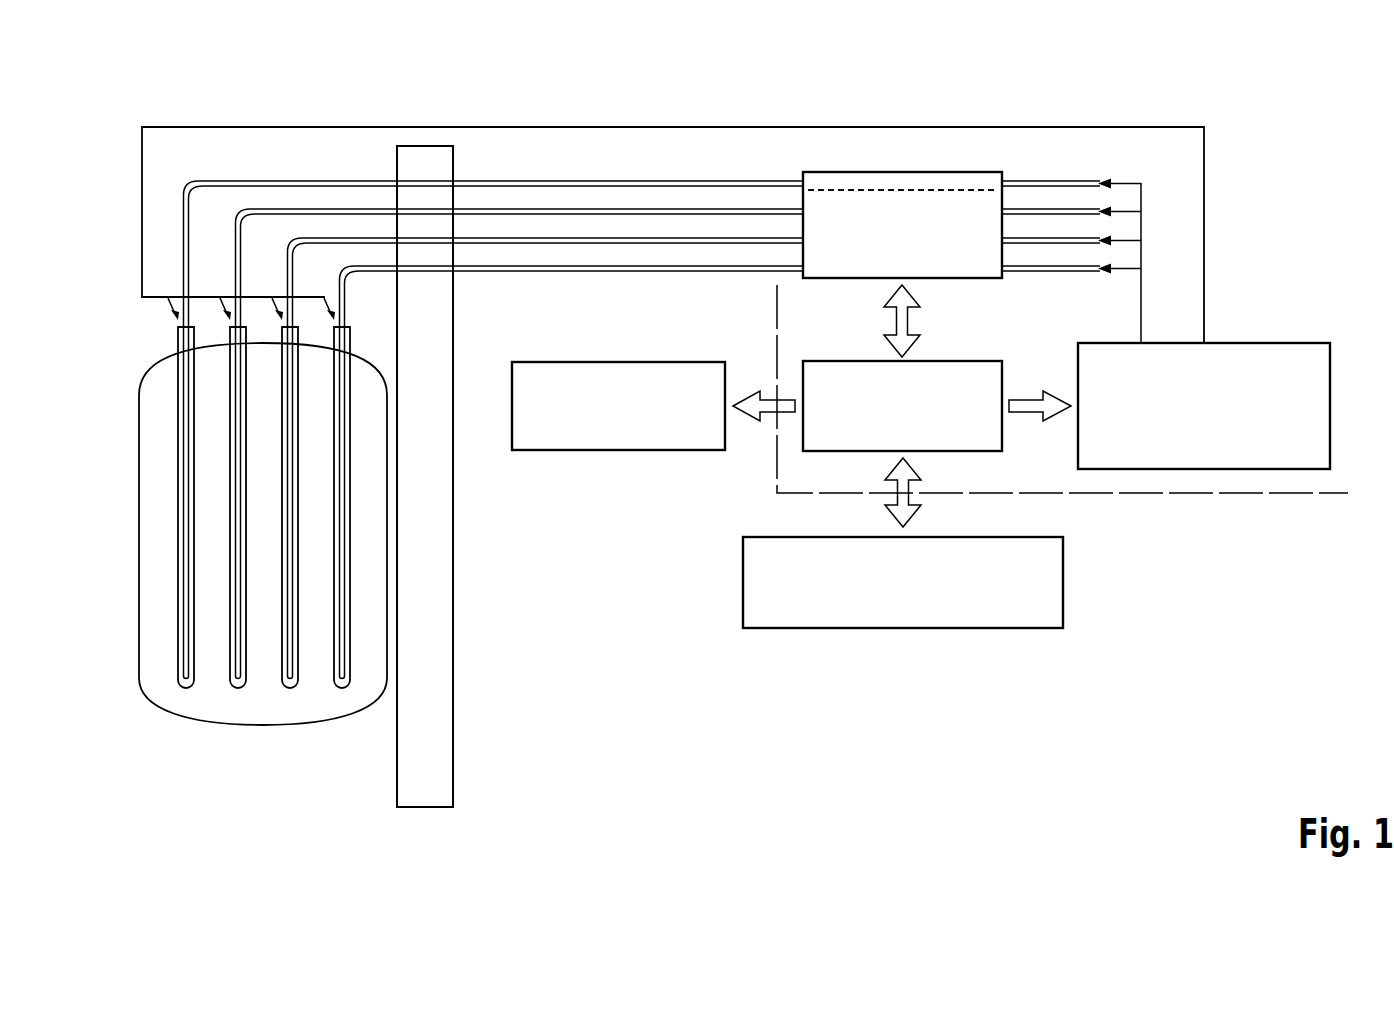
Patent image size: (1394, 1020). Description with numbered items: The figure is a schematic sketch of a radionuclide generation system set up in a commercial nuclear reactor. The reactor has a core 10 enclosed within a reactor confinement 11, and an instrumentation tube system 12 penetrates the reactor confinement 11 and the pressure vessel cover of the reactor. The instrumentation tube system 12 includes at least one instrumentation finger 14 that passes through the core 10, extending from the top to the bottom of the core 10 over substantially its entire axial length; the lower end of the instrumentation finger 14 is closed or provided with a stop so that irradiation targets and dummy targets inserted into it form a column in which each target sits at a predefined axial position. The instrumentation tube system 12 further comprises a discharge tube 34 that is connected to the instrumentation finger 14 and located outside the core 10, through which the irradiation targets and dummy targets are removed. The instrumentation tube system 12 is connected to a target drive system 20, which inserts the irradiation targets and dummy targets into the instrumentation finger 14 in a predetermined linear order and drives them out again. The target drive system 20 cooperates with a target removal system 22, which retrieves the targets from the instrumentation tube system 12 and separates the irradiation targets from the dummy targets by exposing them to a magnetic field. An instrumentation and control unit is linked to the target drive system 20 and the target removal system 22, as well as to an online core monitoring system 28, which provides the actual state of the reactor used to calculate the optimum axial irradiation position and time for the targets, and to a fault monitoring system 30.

The core 10 is at (140, 606).
The reactor confinement 11 is at (432, 735).
The instrumentation tube system 12 is at (392, 267).
The instrumentation finger 14 is at (177, 528).
The target drive system 20 is at (885, 421).
The target removal system 22 is at (902, 225).
The online core monitoring system 28 is at (885, 598).
The fault monitoring system 30 is at (601, 423).
The discharge tube 34 is at (862, 180).